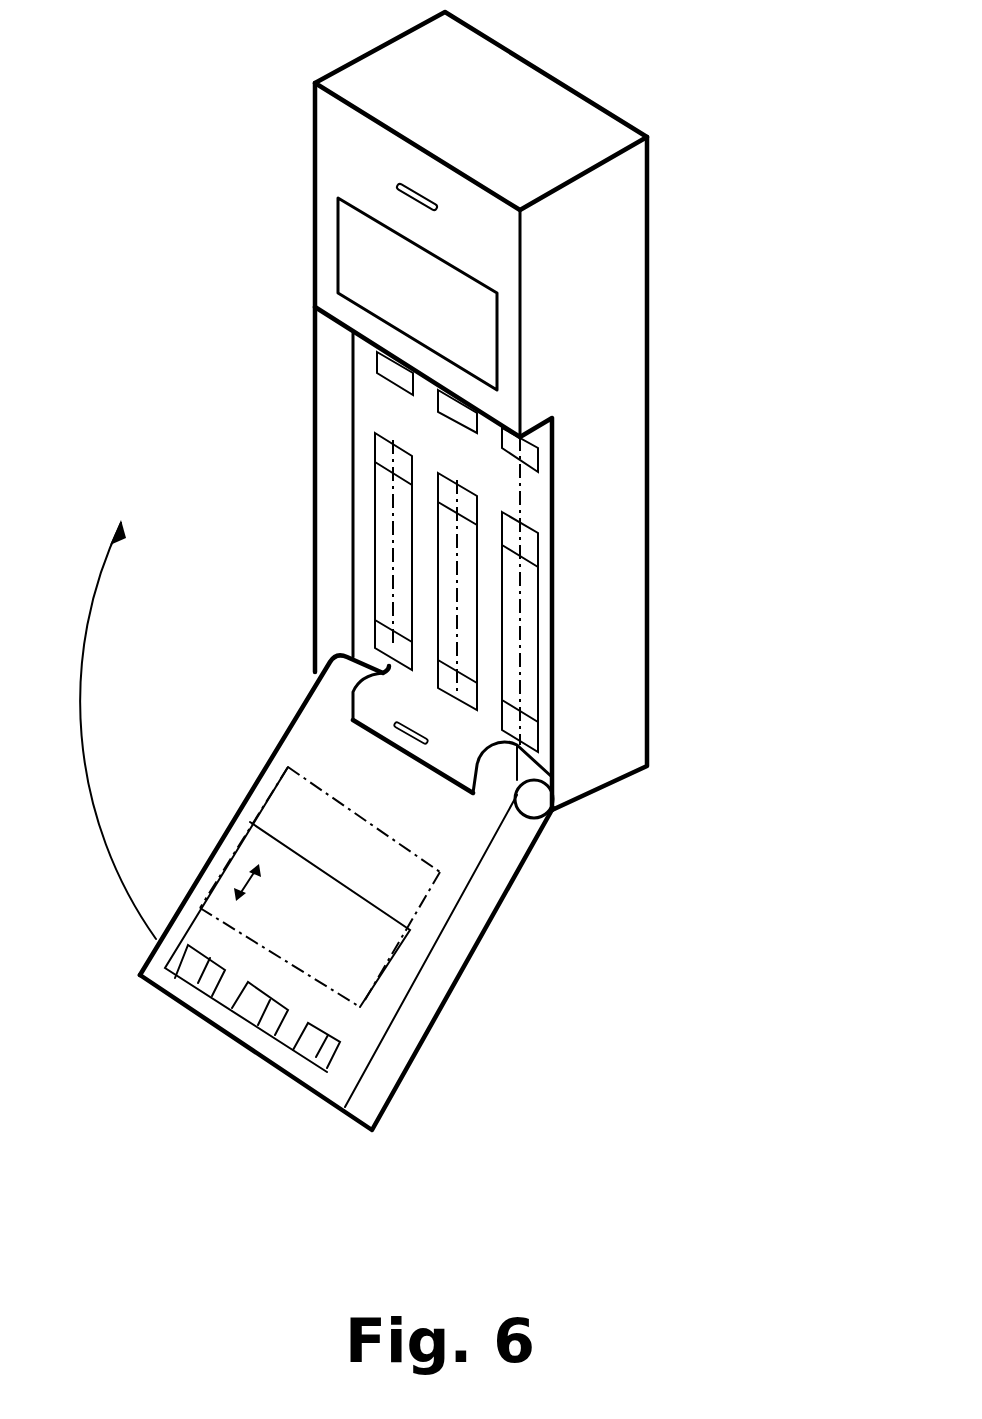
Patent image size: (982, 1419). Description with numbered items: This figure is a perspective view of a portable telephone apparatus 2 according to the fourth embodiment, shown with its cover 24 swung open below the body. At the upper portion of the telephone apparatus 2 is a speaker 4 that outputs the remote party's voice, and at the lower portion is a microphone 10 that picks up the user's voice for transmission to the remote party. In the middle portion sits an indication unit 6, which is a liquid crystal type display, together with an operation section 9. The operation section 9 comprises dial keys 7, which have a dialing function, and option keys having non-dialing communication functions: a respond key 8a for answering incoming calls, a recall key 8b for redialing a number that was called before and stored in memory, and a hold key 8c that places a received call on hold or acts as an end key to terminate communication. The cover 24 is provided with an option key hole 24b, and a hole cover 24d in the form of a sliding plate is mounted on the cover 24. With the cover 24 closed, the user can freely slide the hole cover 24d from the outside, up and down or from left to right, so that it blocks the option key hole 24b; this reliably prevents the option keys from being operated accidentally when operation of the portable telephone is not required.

The telephone apparatus 2 is at (504, 58).
The speaker 4 is at (397, 186).
The indication unit 6 is at (338, 265).
The respond key 8a is at (377, 362).
The recall key 8b is at (438, 410).
The hold key 8c is at (538, 455).
The operation section 9 is at (355, 517).
The dial keys 7 is at (536, 553).
The microphone 10 is at (374, 722).
The cover 24 is at (253, 804).
The option key hole 24b is at (205, 985).
The hole cover 24d is at (430, 902).